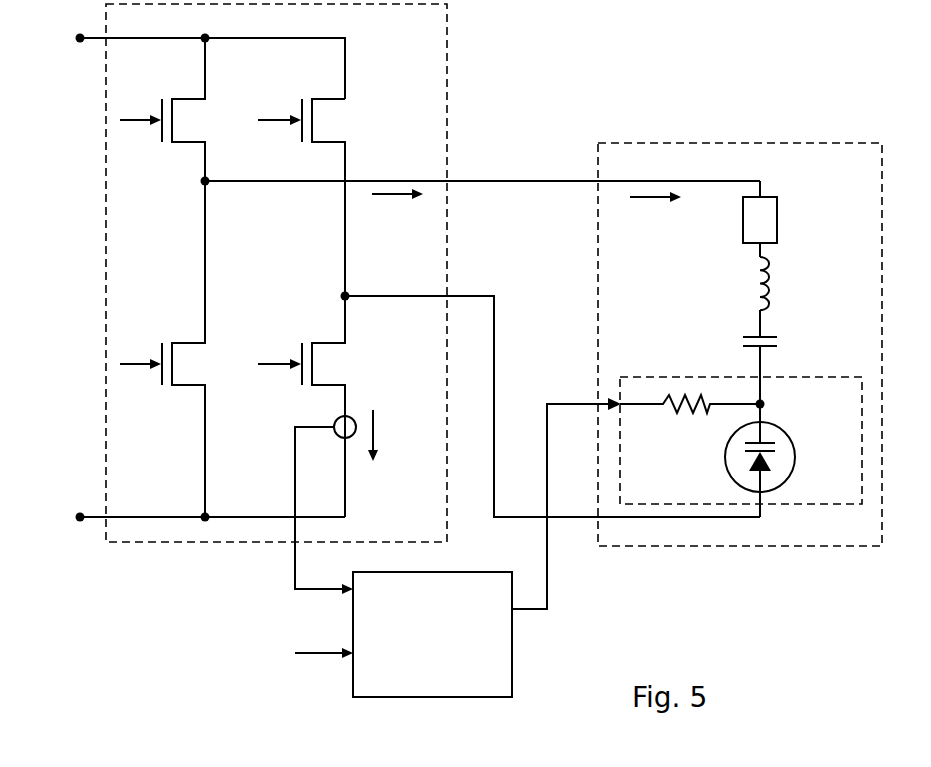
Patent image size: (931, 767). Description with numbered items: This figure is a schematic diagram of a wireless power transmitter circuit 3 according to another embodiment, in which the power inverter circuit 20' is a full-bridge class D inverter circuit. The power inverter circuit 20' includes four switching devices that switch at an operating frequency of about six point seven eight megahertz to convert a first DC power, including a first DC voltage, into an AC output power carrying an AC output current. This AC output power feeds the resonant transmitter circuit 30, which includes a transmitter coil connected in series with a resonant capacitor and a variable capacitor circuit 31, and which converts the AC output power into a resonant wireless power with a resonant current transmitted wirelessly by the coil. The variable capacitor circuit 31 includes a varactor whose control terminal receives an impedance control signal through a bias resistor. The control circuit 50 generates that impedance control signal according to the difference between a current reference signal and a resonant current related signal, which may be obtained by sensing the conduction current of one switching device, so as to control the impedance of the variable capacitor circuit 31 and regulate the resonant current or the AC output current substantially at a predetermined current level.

The wireless power transmitter circuit 3 is at (791, 49).
The power inverter circuit 20' is at (236, 299).
The resonant transmitter circuit 30 is at (733, 143).
The variable capacitor circuit 31 is at (646, 503).
The control circuit 50 is at (446, 688).